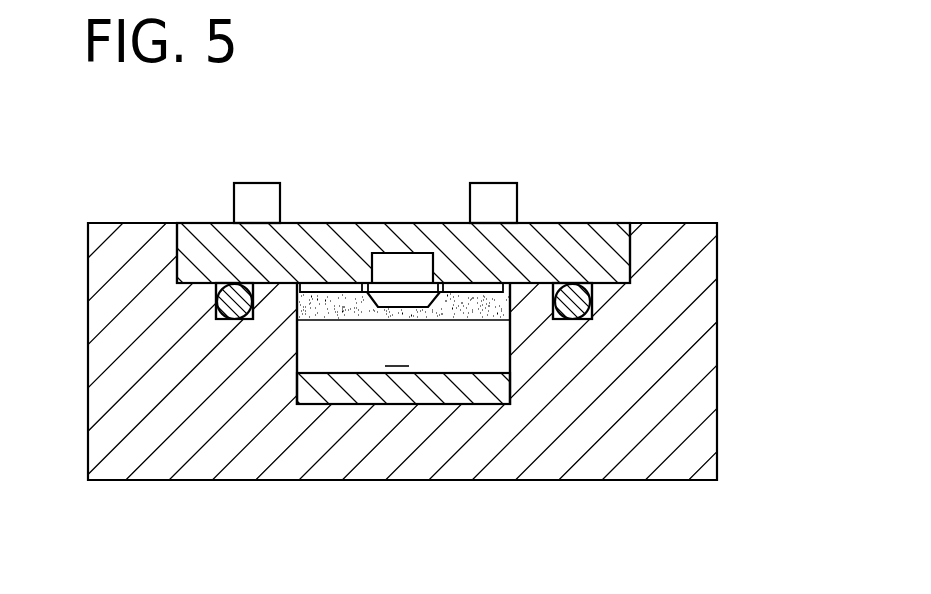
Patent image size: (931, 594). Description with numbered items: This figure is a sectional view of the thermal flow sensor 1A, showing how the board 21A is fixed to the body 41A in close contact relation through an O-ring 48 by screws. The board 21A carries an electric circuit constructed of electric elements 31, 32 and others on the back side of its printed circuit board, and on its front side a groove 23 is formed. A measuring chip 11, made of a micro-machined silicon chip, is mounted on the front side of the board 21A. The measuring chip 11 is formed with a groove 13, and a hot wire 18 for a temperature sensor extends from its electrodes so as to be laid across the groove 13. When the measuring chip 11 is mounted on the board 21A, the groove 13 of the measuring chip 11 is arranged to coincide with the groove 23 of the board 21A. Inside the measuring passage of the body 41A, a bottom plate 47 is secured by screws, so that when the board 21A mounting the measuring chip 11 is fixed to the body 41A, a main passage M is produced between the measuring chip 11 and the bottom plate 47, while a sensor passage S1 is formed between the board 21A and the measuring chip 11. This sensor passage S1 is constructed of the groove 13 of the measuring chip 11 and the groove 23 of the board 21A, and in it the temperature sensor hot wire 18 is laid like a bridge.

The thermal flow sensor 1A is at (669, 114).
The measuring chip 11 is at (493, 290).
The groove 13 is at (382, 297).
The hot wire for a temperature sensor 18 is at (417, 283).
The board 21A is at (592, 242).
The groove 23 is at (397, 263).
The electric element 31 is at (488, 191).
The electric element 32 is at (254, 191).
The body 41A is at (707, 438).
The bottom plate 47 is at (432, 397).
The O-ring 48 is at (230, 305).
The sensor passage S1 is at (388, 123).